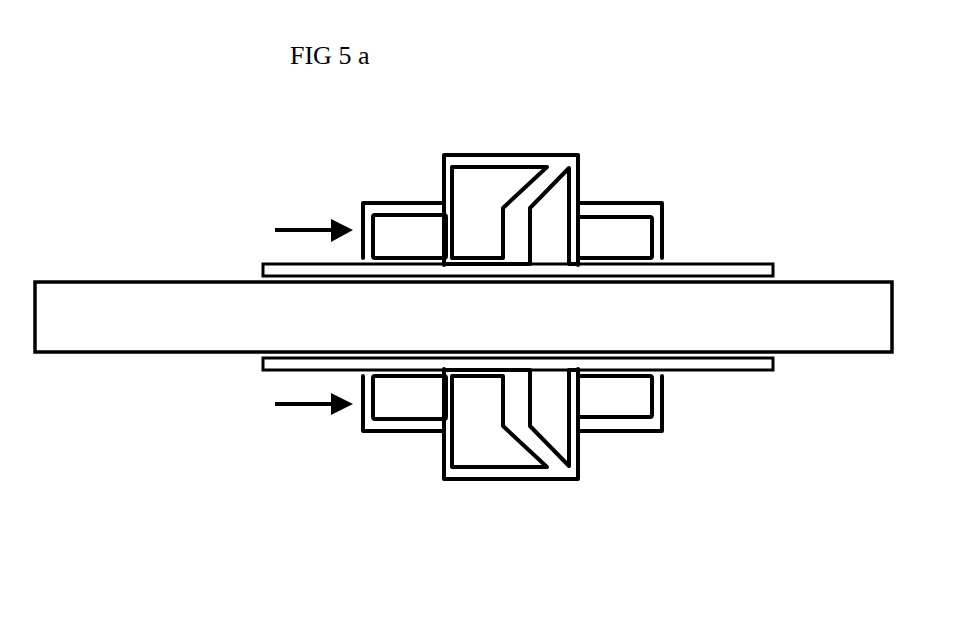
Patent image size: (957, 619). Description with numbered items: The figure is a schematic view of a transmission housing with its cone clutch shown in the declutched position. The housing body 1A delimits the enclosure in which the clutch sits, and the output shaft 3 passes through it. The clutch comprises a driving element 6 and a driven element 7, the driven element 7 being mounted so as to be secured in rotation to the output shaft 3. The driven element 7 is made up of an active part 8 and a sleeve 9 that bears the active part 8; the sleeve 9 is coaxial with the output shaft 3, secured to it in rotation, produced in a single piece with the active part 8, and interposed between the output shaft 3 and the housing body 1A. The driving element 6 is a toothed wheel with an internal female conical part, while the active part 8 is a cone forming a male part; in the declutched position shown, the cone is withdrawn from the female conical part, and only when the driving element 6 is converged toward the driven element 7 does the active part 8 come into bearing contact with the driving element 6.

The housing body 1A is at (667, 226).
The output shaft 3 is at (835, 353).
The driving element 6 is at (467, 187).
The driven element 7 is at (558, 202).
The active part 8 is at (557, 185).
The sleeve 9 is at (750, 263).